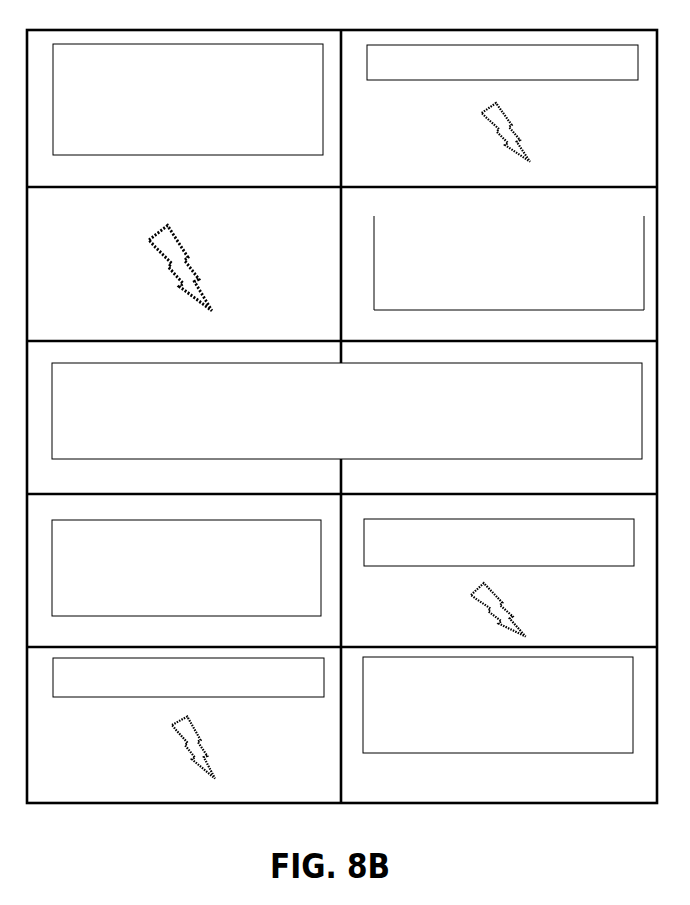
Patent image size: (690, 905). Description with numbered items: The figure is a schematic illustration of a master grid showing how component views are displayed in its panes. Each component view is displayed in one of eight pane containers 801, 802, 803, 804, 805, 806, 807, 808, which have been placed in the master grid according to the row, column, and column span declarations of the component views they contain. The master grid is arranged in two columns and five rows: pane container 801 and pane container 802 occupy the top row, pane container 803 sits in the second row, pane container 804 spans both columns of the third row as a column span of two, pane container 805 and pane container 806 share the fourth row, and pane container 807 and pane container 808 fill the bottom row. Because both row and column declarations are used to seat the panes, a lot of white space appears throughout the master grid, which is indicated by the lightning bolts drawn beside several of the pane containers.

The pane container 801 is at (188, 99).
The pane container 802 is at (502, 62).
The pane container 803 is at (509, 263).
The pane container 804 is at (347, 411).
The pane container 805 is at (186, 568).
The pane container 806 is at (499, 542).
The pane container 807 is at (188, 677).
The pane container 808 is at (498, 705).